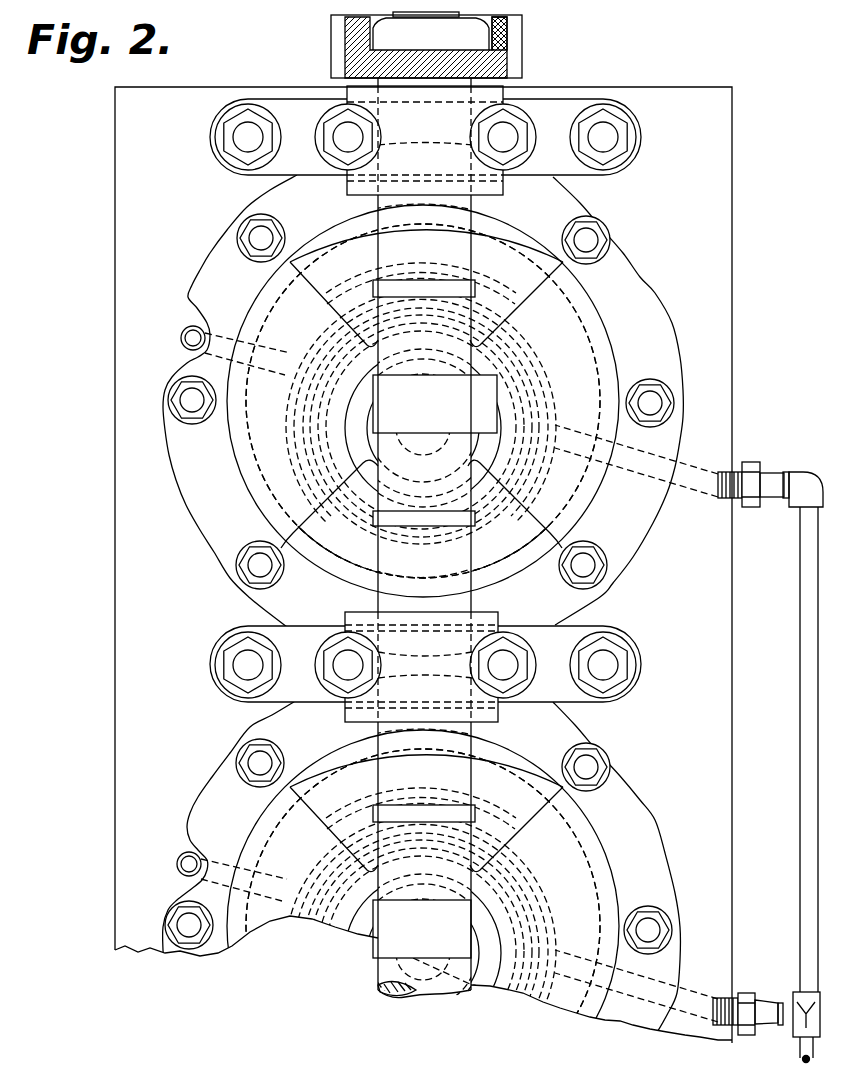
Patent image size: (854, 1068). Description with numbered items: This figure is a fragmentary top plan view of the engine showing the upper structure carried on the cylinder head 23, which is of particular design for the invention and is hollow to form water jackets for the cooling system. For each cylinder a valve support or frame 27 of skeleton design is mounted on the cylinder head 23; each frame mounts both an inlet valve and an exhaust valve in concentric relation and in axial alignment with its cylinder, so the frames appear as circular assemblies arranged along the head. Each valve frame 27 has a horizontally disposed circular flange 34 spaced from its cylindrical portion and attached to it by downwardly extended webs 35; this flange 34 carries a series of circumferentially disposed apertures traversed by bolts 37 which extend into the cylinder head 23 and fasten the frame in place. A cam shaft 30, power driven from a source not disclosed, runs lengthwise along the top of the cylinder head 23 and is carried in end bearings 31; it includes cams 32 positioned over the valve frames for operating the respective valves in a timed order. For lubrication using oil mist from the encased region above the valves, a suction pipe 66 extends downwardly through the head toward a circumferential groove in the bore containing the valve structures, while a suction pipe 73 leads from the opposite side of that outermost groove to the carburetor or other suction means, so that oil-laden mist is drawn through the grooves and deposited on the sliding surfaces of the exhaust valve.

The cylinder head 23 is at (115, 690).
The valve support or frame 27 is at (536, 292).
The cam shaft 30 is at (390, 557).
The end bearings 31 is at (425, 404).
The cams 32 is at (420, 286).
The circular flange 34 is at (650, 301).
The webs 35 is at (250, 492).
The bolts 37 is at (592, 239).
The suction pipe 66 is at (189, 327).
The suction pipe 73 is at (693, 465).